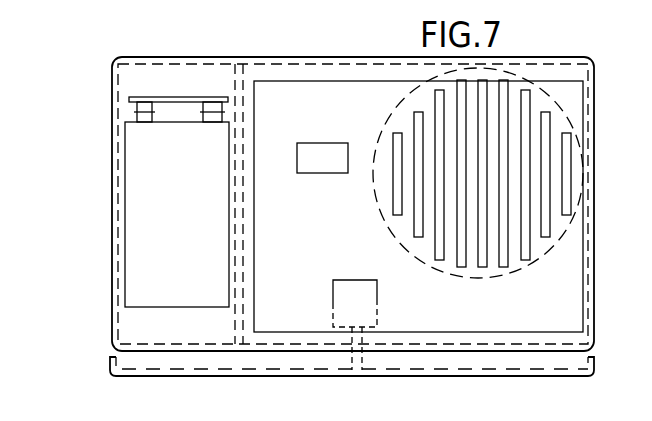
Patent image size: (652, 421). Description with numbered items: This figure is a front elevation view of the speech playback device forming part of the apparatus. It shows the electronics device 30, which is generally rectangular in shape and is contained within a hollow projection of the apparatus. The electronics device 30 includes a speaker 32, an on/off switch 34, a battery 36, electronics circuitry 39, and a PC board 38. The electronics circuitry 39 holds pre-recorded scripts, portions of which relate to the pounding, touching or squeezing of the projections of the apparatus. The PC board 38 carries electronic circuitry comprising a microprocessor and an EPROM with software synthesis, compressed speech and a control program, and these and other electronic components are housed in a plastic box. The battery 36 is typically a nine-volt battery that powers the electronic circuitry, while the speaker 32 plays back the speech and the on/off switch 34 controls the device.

The electronics device 30 is at (572, 165).
The speaker 32 is at (560, 242).
The on/off switch 34 is at (358, 318).
The battery 36 is at (140, 252).
The PC board 38 is at (303, 102).
The electronics circuitry 39 is at (337, 142).